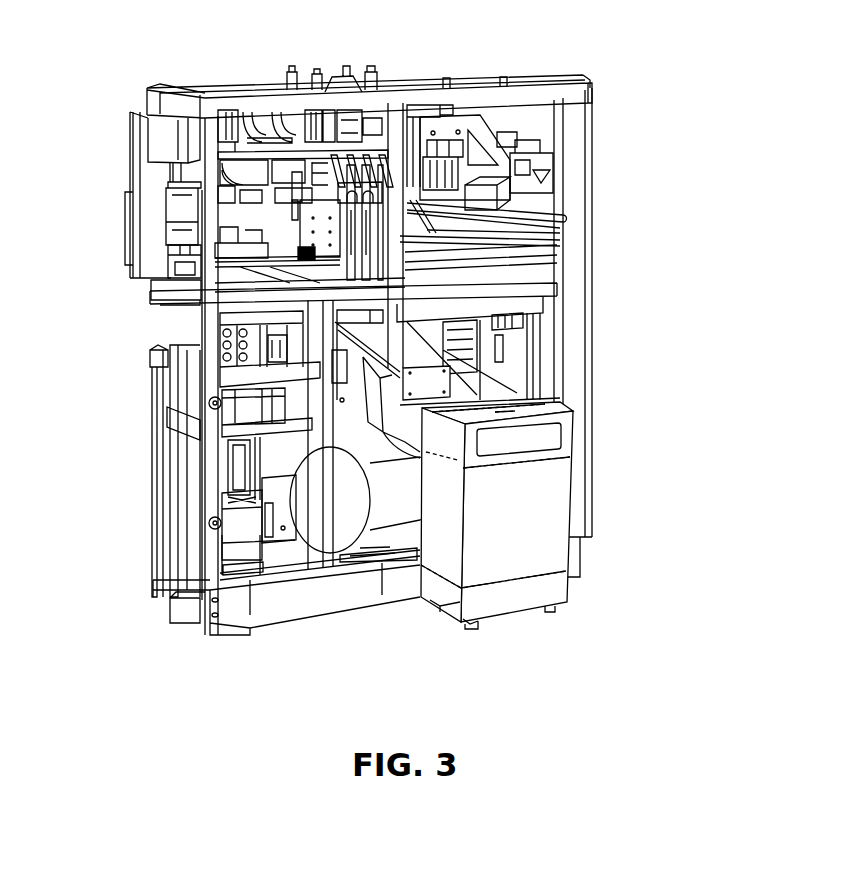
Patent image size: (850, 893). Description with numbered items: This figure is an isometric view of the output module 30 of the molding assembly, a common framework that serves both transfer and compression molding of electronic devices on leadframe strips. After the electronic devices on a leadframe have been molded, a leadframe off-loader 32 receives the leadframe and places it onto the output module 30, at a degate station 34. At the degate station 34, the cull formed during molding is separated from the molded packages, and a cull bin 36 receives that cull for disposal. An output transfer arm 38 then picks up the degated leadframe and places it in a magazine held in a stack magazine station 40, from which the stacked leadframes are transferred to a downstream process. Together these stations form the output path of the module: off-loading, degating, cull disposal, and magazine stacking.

The output module 30 is at (755, 108).
The leadframe off-loader 32 is at (470, 204).
The degate station 34 is at (298, 251).
The cull bin 36 is at (519, 435).
The output transfer arm 38 is at (175, 250).
The stack magazine station 40 is at (245, 355).